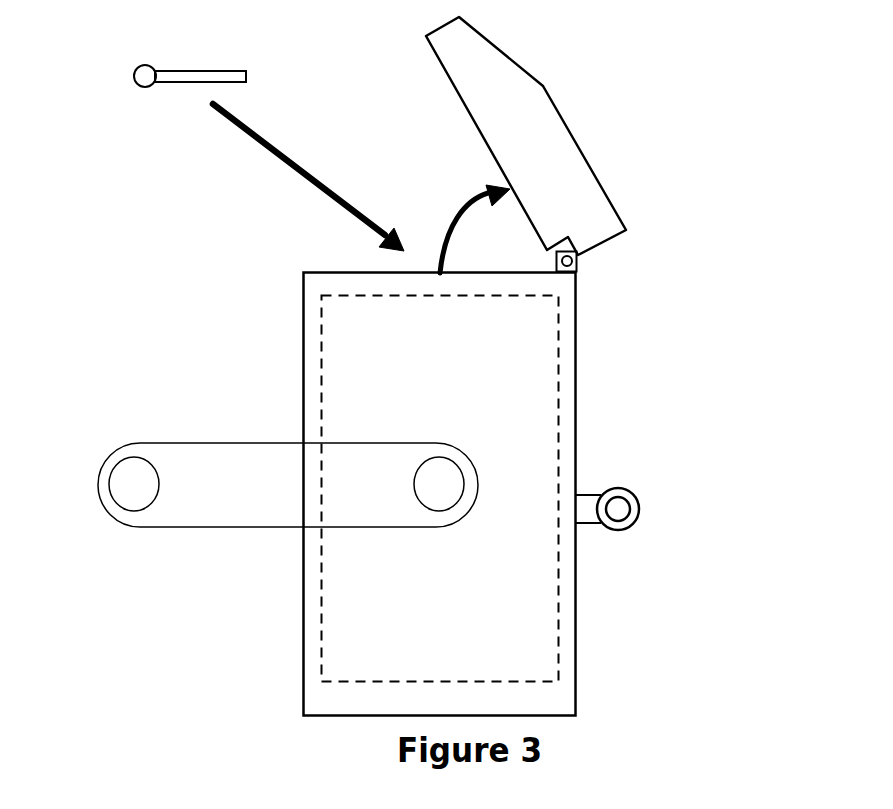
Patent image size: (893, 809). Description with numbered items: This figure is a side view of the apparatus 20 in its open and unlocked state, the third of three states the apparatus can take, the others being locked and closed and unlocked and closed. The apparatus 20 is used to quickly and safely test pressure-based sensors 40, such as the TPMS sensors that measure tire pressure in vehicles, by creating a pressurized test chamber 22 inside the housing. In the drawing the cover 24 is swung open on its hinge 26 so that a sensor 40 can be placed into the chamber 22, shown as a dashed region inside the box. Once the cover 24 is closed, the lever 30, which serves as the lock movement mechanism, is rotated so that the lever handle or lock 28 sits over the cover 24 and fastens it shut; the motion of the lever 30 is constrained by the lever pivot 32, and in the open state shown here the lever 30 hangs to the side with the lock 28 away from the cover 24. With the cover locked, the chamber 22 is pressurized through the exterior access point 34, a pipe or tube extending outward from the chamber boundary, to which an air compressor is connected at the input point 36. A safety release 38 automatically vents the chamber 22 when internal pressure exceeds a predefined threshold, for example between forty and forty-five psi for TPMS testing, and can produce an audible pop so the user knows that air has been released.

The apparatus 20 is at (303, 353).
The chamber 22 is at (350, 658).
The cover 24 is at (582, 218).
The hinge 26 is at (577, 265).
The lock 28 is at (126, 489).
The lever 30 is at (305, 495).
The lever pivot 32 is at (439, 488).
The exterior access point 34 is at (588, 493).
The input point 36 is at (620, 528).
The safety release 38 is at (625, 488).
The pressure-based sensor 40 is at (175, 83).